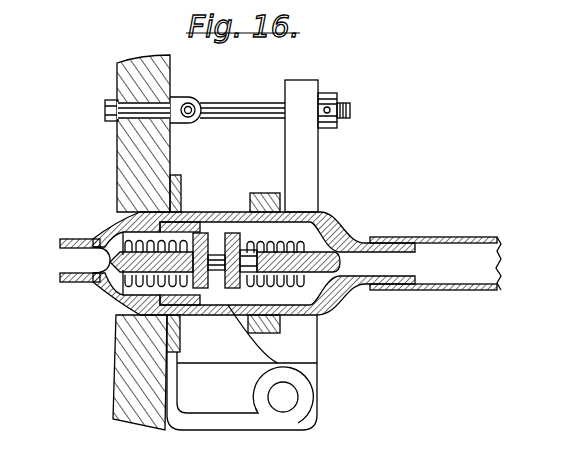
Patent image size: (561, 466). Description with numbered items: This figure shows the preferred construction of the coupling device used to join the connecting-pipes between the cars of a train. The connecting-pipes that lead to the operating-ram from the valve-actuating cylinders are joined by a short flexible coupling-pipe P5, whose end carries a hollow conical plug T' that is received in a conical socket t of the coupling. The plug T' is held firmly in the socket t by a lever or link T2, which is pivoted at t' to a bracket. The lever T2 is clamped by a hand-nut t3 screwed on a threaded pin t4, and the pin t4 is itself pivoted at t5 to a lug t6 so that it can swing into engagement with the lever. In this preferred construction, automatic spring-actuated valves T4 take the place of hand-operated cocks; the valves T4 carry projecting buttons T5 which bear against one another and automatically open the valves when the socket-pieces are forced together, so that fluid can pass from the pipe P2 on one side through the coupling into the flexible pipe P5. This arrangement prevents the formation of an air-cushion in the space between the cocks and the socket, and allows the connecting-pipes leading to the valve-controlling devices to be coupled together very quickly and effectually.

The lug t6 is at (174, 97).
The pivot of threaded pin t5 is at (191, 106).
The threaded pin t4 is at (234, 104).
The hand-nut t3 is at (336, 92).
The lever or link T2 is at (285, 160).
The automatic spring-actuated valve T4 is at (210, 230).
The projecting button T5 is at (229, 232).
The conical socket t is at (225, 303).
The hollow conical plug T' is at (242, 367).
The pivot of lever t' is at (283, 397).
The inlet pipe P2 is at (72, 283).
The flexible coupling-pipe P5 is at (435, 263).